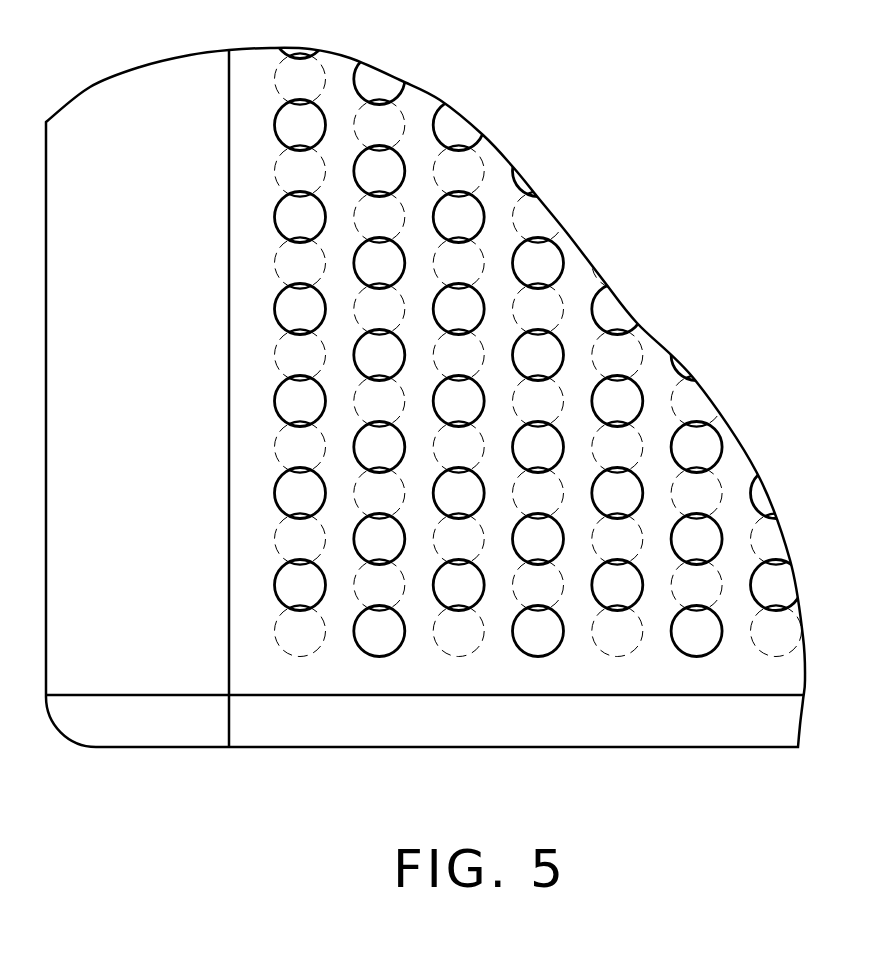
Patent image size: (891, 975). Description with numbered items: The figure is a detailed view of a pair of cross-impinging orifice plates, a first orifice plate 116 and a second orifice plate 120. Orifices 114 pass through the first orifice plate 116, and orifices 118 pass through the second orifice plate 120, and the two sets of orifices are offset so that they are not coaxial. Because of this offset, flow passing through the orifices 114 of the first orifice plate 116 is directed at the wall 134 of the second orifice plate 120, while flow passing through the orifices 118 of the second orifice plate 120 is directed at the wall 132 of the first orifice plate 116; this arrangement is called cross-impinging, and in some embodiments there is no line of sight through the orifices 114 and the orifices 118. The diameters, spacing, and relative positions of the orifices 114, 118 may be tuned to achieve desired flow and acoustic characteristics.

The orifices 114 is at (313, 652).
The first orifice plate 116 is at (263, 663).
The orifices 118 is at (712, 648).
The second orifice plate 120 is at (645, 683).
The wall 132 is at (300, 583).
The wall 134 is at (573, 643).